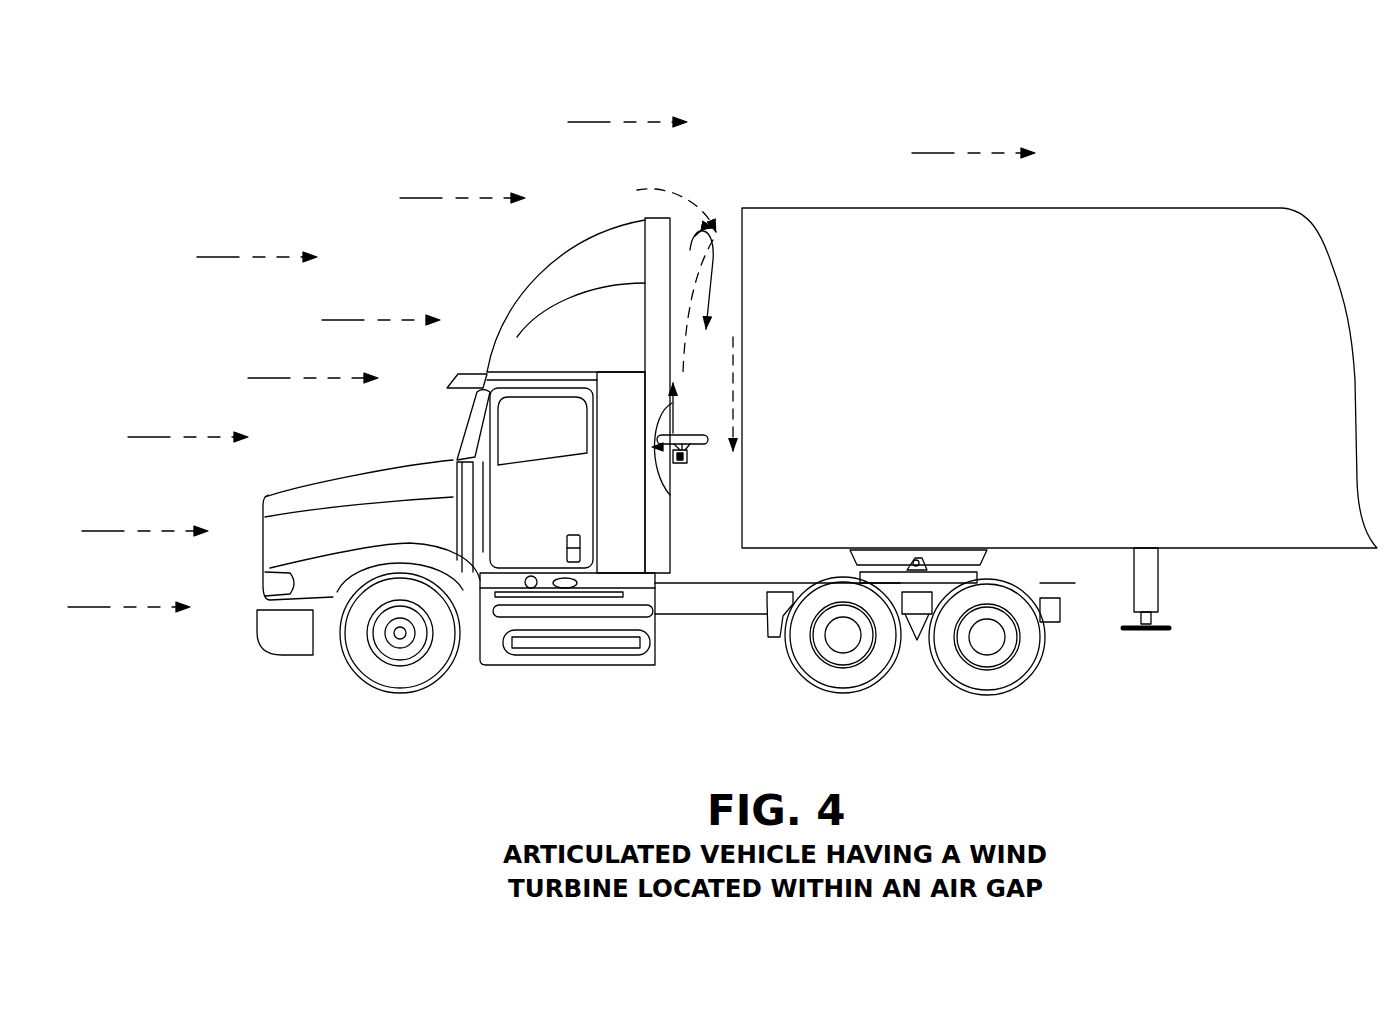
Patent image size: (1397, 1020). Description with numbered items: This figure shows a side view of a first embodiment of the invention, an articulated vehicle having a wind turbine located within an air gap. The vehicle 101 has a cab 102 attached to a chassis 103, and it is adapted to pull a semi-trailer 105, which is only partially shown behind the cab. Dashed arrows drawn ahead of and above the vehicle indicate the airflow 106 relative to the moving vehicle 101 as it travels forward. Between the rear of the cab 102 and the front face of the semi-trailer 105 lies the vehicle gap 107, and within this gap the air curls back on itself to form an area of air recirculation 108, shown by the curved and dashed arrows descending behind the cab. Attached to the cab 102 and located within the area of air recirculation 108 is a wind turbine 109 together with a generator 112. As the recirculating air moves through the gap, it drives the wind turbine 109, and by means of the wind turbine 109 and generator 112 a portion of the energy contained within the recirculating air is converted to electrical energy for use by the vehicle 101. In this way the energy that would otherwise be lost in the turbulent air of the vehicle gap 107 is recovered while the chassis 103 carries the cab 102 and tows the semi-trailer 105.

The vehicle 101 is at (378, 465).
The cab 102 is at (497, 351).
The chassis 103 is at (680, 616).
The semi-trailer 105 is at (1068, 246).
The airflow 106 is at (291, 256).
The vehicle gap 107 is at (727, 291).
The area of air recirculation 108 is at (729, 316).
The wind turbine 109 is at (708, 449).
The generator 112 is at (683, 468).